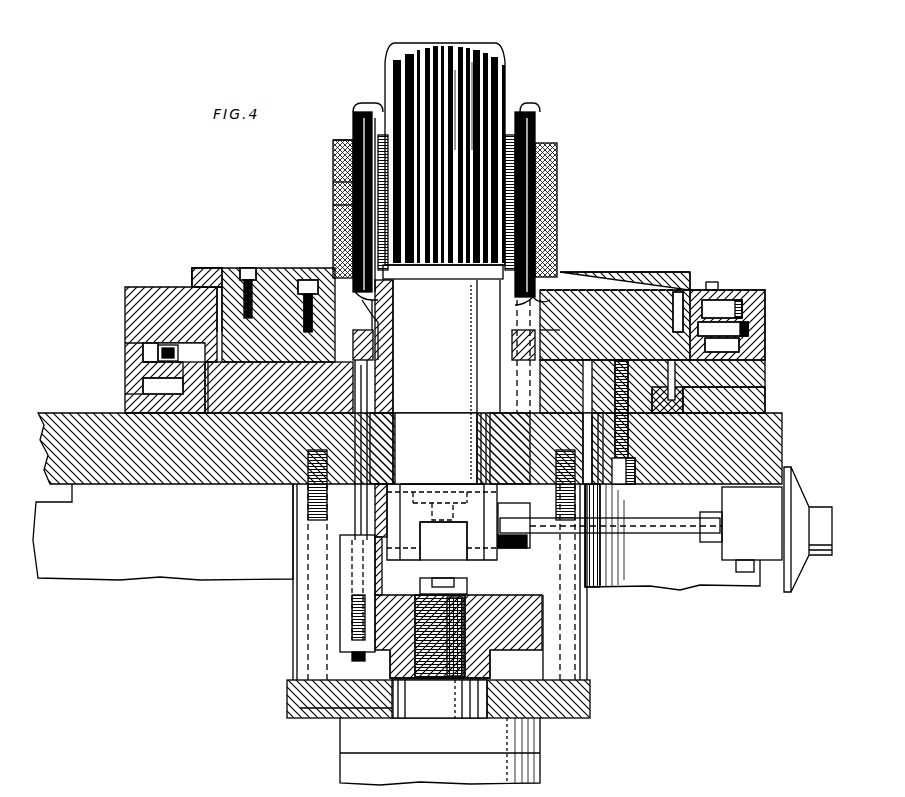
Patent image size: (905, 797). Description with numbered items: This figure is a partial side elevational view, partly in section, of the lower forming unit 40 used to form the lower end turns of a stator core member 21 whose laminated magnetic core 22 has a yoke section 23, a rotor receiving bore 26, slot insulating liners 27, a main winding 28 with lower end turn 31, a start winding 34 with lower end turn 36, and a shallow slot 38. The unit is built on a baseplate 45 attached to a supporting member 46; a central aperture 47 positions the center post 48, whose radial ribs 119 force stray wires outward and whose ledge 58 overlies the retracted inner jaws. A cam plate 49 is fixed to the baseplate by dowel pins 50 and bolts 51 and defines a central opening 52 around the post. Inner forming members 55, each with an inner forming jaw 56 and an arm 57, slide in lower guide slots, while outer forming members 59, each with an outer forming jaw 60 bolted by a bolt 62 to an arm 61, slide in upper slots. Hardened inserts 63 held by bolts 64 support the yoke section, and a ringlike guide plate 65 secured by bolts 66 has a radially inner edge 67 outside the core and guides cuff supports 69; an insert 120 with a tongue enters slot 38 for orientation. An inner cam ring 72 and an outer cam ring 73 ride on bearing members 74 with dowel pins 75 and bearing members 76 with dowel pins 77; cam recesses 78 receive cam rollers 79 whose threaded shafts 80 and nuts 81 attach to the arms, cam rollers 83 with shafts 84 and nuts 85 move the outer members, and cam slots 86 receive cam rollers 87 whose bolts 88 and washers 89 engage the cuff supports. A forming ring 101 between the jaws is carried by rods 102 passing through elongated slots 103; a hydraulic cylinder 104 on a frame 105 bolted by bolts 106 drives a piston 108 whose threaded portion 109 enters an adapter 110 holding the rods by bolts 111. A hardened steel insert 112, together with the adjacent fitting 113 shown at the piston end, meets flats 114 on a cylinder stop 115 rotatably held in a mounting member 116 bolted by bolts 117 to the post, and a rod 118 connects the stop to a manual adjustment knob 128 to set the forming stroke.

The stator core member 21 is at (333, 162).
The laminated magnetic core 22 is at (333, 205).
The yoke section 23 is at (333, 183).
The rotor receiving bore 26 is at (370, 108).
The insulating liner 27 is at (540, 135).
The main winding 28 is at (333, 145).
The end turn 31 is at (378, 323).
The start winding 34 is at (355, 118).
The end turn 36 is at (540, 321).
The slot 38 is at (557, 172).
The lower forming unit 40 is at (118, 400).
The baseplate 45 is at (782, 447).
The supporting member 46 is at (105, 545).
The central aperture 47 is at (398, 462).
The center post 48 is at (446, 45).
The cam plate 49 is at (265, 292).
The dowel pins 50 is at (594, 484).
The bolts 51 is at (618, 484).
The central opening 52 is at (346, 346).
The inner forming member 55 is at (282, 405).
The inner forming jaw 56 is at (383, 388).
The arm 57 is at (230, 395).
The ledge 58 is at (450, 268).
The outer forming member 59 is at (625, 305).
The outer forming jaw 60 is at (545, 345).
The arm 61 is at (645, 320).
The bolt 62 is at (598, 272).
The inserts 63 is at (290, 282).
The bolts 64 is at (305, 283).
The guide plate 65 is at (215, 268).
The bolts 66 is at (249, 268).
The radially inner edge 67 is at (316, 282).
The cuff support 69 is at (690, 290).
The inner cam ring 72 is at (130, 388).
The outer cam ring 73 is at (125, 303).
The bearing members 74 is at (690, 408).
The dowel pins 75 is at (700, 395).
The bearing members 76 is at (205, 293).
The dowel pins 77 is at (223, 322).
The cam recesses 78 is at (128, 375).
The cam roller 79 is at (143, 382).
The threaded shaft 80 is at (167, 345).
The nut 81 is at (143, 354).
The cam rollers 83 is at (770, 320).
The shafts 84 is at (748, 337).
The nuts 85 is at (745, 352).
The cam slots 86 is at (750, 292).
The cam rollers 87 is at (680, 300).
The bolt 88 is at (714, 284).
The washer 89 is at (732, 292).
The forming ring 101 is at (380, 346).
The rods 102 is at (383, 436).
The elongated slots 103 is at (350, 385).
The hydraulic cylinder 104 is at (545, 769).
The frame 105 is at (590, 702).
The bolts 106 is at (298, 657).
The piston 108 is at (433, 695).
The threaded portion 109 is at (480, 667).
The adapter 110 is at (520, 625).
The bolts 111 is at (352, 652).
The hardened steel insert 112 is at (455, 582).
The fitting 113 is at (420, 585).
The flats 114 is at (444, 540).
The cylinder stop 115 is at (515, 550).
The mounting member 116 is at (398, 495).
The bolts 117 is at (432, 505).
The rod 118 is at (658, 536).
The ribs 119 is at (474, 62).
The insert 120 is at (562, 272).
The manual adjustment knob 128 is at (826, 528).